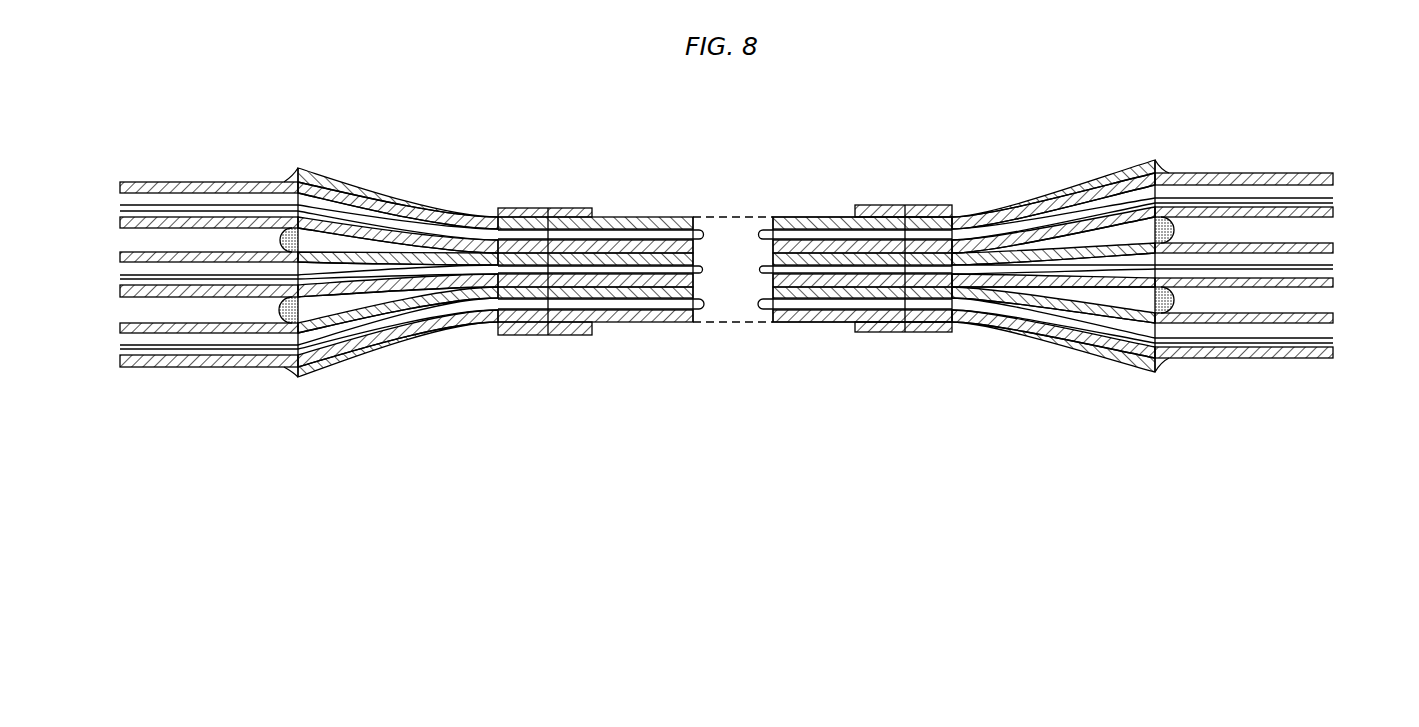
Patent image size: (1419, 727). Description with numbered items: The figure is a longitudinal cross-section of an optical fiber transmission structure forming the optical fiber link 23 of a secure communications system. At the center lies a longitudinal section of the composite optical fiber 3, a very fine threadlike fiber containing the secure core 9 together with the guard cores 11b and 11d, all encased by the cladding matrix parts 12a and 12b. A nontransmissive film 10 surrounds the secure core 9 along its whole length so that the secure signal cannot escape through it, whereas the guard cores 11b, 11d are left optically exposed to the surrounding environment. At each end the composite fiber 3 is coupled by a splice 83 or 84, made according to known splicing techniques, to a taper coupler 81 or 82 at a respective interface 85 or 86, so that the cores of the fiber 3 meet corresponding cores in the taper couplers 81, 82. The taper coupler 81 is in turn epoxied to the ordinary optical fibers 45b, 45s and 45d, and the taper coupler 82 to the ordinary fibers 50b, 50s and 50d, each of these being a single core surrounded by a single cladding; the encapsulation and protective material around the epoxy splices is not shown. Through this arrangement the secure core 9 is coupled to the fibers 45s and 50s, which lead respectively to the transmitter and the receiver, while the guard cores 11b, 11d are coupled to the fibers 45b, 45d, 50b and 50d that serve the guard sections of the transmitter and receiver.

The composite optical fiber 3 is at (797, 323).
The secure core 9 is at (760, 268).
The nontransmissive film 10 is at (617, 255).
The guard core 11b is at (660, 226).
The guard core 11d is at (685, 307).
The cladding matrix part 12a is at (661, 283).
The cladding matrix part 12b is at (622, 322).
The optical fiber link 23 is at (862, 121).
The optical fiber 45b is at (120, 210).
The optical fiber 45s is at (120, 268).
The optical fiber 45d is at (120, 341).
The optical fiber 50b is at (1333, 203).
The optical fiber 50s is at (1333, 268).
The optical fiber 50d is at (1333, 338).
The taper coupler 81 is at (360, 193).
The taper coupler 82 is at (1012, 203).
The splice 83 is at (536, 336).
The splice 84 is at (898, 330).
The interface 85 is at (553, 213).
The interface 86 is at (890, 213).